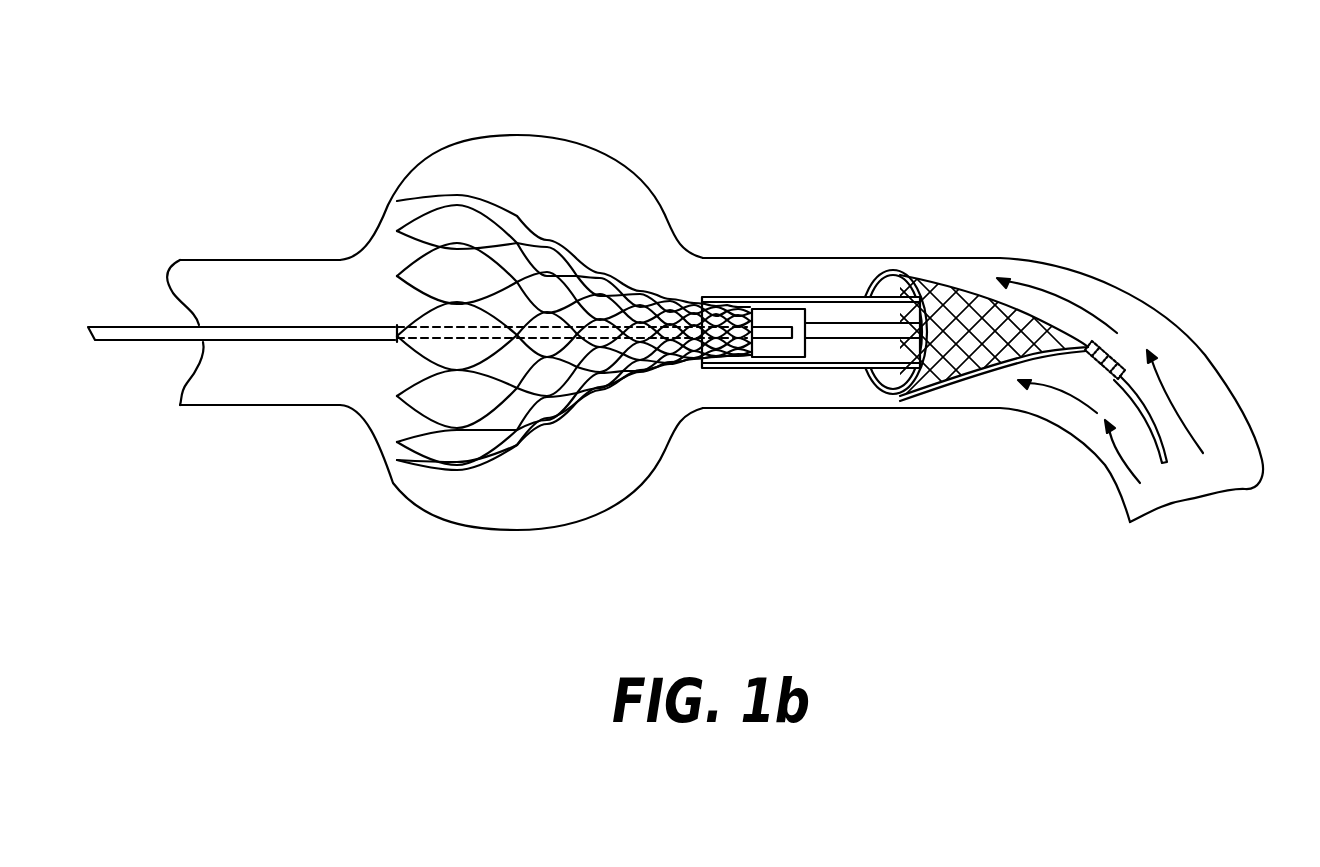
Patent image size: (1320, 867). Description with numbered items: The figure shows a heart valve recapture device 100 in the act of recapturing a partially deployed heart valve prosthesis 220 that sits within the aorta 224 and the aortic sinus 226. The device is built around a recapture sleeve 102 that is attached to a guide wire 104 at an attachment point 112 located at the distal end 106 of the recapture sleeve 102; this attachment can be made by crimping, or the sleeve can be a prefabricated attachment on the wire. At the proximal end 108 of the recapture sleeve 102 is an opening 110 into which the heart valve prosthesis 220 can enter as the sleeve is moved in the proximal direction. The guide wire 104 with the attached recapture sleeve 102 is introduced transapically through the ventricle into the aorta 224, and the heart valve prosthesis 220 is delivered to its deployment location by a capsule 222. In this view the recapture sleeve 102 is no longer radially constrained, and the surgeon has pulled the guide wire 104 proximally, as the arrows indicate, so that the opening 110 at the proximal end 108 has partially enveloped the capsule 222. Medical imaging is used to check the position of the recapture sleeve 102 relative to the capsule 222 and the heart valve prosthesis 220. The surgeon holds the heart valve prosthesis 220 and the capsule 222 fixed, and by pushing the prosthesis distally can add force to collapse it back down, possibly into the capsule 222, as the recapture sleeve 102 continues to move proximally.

The heart valve recapture device 100 is at (978, 398).
The recapture sleeve 102 is at (1007, 310).
The guide wire 104 is at (129, 325).
The distal end 106 is at (1093, 337).
The proximal end 108 is at (895, 273).
The opening 110 is at (893, 380).
The attachment point 112 is at (1093, 357).
The heart valve prosthesis 220 is at (503, 210).
The capsule 222 is at (833, 313).
The aorta 224 is at (1190, 373).
The aortic sinus 226 is at (592, 178).